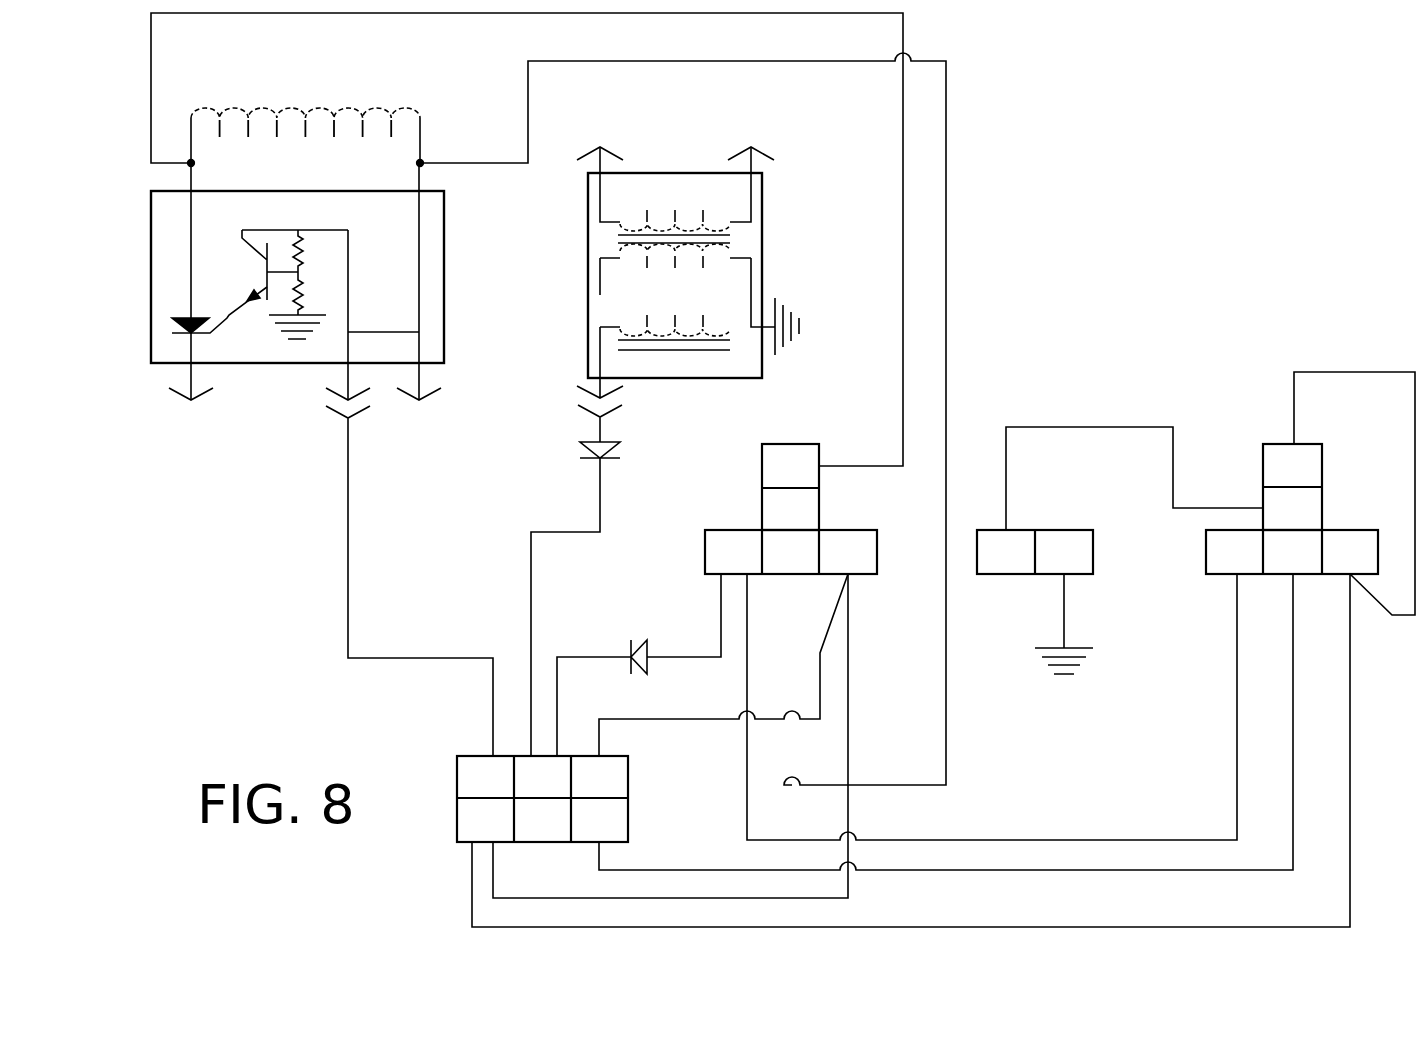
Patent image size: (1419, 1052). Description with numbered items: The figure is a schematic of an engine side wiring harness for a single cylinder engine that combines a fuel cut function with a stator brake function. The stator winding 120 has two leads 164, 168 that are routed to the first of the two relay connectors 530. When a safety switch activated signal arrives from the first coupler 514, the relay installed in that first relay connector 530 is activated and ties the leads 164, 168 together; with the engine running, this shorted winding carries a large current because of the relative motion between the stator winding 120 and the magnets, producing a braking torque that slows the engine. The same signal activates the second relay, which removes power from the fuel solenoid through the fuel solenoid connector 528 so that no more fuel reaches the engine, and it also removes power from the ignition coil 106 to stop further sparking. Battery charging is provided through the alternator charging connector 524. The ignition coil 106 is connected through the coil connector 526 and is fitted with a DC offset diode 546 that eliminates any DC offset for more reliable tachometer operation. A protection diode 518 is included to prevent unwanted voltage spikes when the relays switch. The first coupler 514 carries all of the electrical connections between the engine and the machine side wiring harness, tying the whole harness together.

The ignition coil 106 is at (763, 243).
The stator winding 120 is at (305, 119).
The lead 164 is at (503, 239).
The lead 168 is at (682, 419).
The first coupler 514 is at (628, 820).
The protection diode 518 is at (632, 647).
The alternator charging connector 524 is at (352, 410).
The coil connector 526 is at (583, 409).
The fuel solenoid connector 528 is at (1093, 550).
The relay connectors 530 is at (819, 515).
The DC offset diode 546 is at (610, 460).